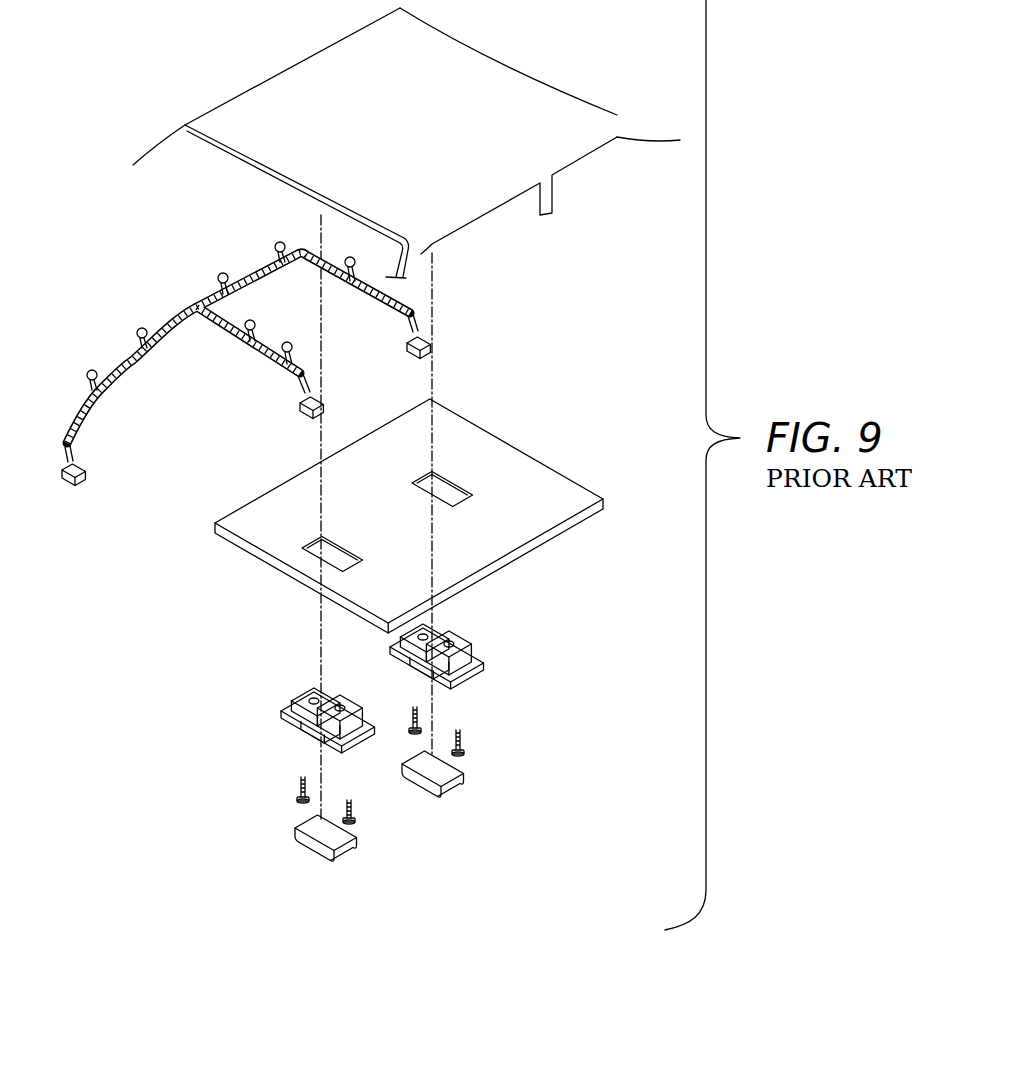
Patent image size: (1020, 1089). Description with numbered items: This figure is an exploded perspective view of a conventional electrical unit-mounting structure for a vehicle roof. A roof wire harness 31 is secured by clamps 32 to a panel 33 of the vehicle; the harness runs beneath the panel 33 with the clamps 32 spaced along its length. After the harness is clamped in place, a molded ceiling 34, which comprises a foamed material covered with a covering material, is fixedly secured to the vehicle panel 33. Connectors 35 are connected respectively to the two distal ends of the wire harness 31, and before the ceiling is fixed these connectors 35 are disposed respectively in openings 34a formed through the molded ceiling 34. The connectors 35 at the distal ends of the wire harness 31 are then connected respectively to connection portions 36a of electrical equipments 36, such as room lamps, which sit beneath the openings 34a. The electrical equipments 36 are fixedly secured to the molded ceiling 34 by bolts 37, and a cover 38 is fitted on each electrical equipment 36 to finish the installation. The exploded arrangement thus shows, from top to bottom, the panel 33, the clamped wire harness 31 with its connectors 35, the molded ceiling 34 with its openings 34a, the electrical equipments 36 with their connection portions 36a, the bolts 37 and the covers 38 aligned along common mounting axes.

The roof wire harness 31 is at (160, 382).
The clamps 32 is at (280, 243).
The panel 33 is at (290, 82).
The molded ceiling 34 is at (562, 464).
The openings 34a is at (456, 497).
The connectors 35 is at (431, 343).
The electrical equipments 36 is at (484, 667).
The connection portions 36a is at (460, 633).
The bolts 37 is at (300, 779).
The cover 38 is at (298, 835).